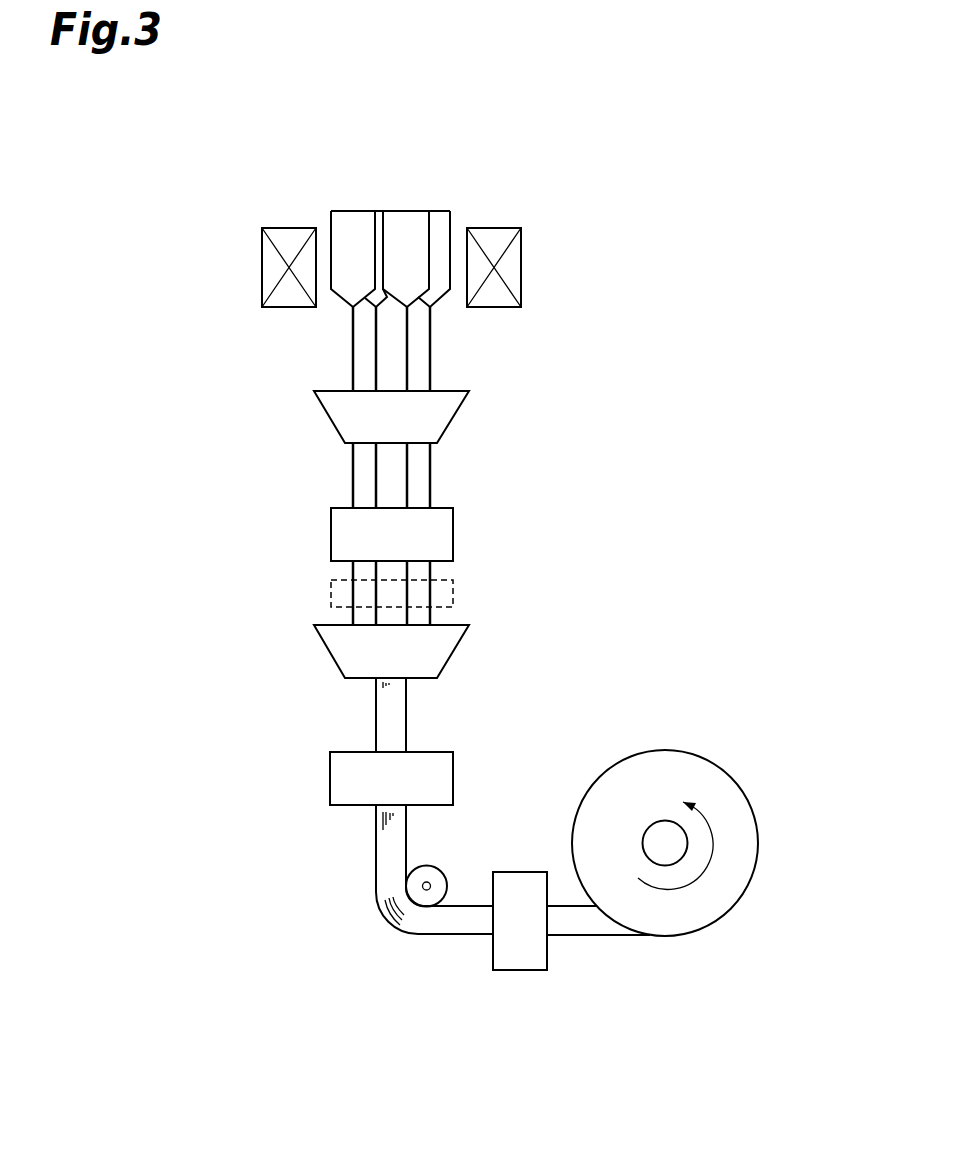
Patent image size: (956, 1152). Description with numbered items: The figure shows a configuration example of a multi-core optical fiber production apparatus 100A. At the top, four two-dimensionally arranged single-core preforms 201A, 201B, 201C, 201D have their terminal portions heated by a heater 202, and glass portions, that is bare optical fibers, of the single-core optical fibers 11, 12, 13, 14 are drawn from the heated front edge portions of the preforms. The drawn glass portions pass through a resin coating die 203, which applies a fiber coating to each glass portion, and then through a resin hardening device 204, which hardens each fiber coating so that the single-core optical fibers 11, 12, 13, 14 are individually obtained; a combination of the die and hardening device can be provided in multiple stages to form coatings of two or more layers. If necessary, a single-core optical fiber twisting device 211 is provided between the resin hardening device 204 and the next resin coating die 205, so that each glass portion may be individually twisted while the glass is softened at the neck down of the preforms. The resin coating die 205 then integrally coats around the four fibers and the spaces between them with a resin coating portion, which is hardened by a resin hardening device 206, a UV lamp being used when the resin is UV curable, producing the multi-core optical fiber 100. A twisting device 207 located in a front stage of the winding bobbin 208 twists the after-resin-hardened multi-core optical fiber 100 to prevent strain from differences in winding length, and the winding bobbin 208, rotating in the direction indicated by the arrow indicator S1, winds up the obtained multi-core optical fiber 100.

The multi-core optical fiber production apparatus 100A is at (578, 152).
The single-core preform 201A is at (331, 227).
The single-core preform 201B is at (430, 238).
The single-core preform 201C is at (440, 211).
The single-core preform 201D is at (380, 211).
The heater 202 is at (260, 268).
The single-core optical fiber 11 is at (352, 318).
The single-core optical fiber 12 is at (407, 350).
The single-core optical fiber 13 is at (430, 380).
The single-core optical fiber 14 is at (376, 350).
The resin coating die 203 is at (330, 423).
The resin hardening device 204 is at (330, 546).
The single-core optical fiber twisting device 211 is at (453, 587).
The resin coating die 205 is at (330, 651).
The multi-core optical fiber 100 is at (375, 716).
The resin hardening device 206 is at (330, 779).
The twisting device 207 is at (517, 871).
The winding bobbin 208 is at (665, 750).
The arrow indicator S1 is at (710, 835).